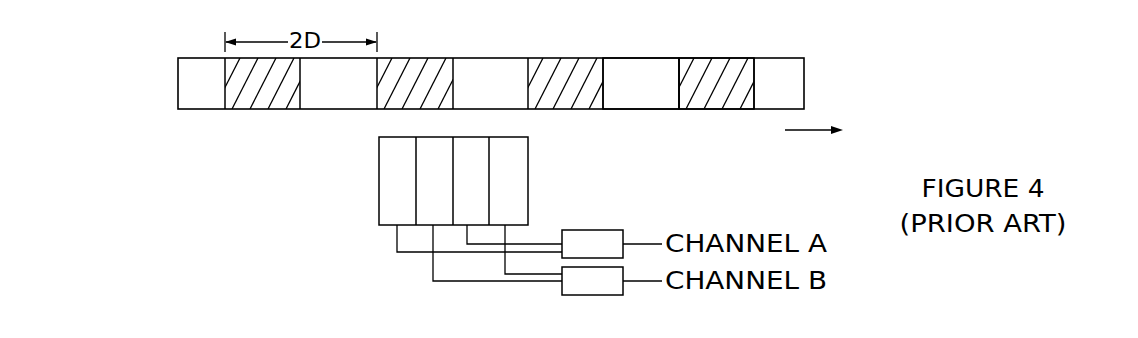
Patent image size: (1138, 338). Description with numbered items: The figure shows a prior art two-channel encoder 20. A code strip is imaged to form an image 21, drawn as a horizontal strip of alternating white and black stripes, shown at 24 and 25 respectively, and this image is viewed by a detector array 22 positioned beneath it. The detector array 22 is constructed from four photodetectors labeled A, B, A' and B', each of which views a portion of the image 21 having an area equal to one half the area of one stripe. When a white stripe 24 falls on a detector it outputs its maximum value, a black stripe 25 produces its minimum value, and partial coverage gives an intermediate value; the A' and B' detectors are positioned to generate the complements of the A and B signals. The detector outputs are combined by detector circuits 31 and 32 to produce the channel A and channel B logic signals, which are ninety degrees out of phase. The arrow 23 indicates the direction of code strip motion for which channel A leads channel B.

The two-channel encoder 20 is at (930, 70).
The image of the code strip 21 is at (210, 110).
The detector array 22 is at (379, 180).
The arrow 23 is at (787, 136).
The white stripe 24 is at (635, 110).
The black stripe 25 is at (722, 110).
The detector circuit 31 is at (602, 230).
The detector circuit 32 is at (593, 296).